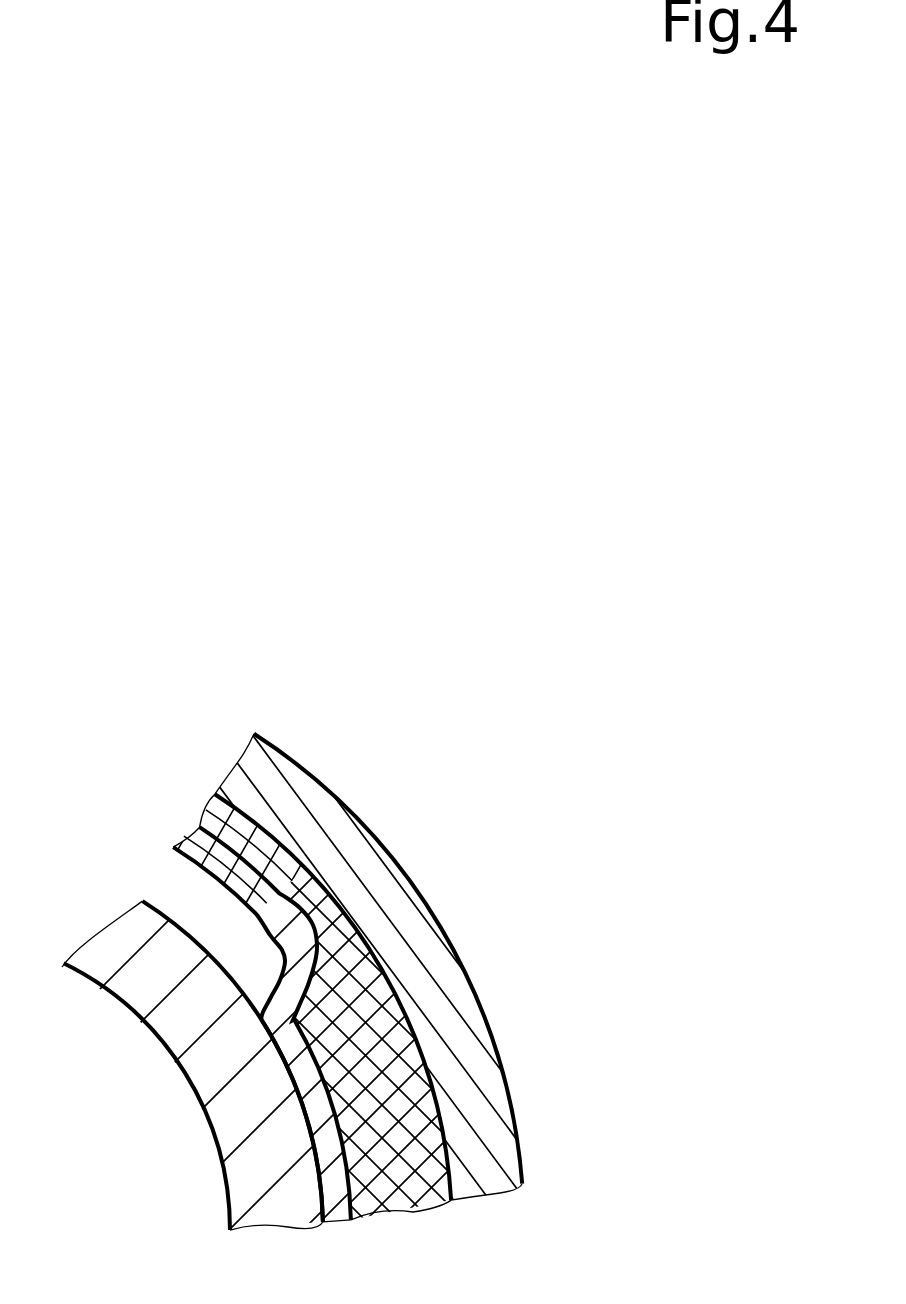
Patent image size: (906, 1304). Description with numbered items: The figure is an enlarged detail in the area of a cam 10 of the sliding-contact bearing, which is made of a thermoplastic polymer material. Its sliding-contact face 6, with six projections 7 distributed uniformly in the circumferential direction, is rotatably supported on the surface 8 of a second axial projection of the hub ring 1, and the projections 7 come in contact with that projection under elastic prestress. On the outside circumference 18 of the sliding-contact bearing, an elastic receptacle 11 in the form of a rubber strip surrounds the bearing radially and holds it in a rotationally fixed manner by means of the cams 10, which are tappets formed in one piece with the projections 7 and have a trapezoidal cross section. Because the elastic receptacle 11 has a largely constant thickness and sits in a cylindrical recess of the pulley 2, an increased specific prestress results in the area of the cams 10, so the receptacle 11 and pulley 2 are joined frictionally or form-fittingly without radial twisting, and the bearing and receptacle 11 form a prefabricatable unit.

The hub ring 1 is at (213, 1058).
The pulley 2 is at (425, 982).
The sliding-contact face 6 is at (298, 1093).
The projection 7 is at (322, 1117).
The surface of hub ring 8 is at (184, 933).
The cam 10 is at (227, 863).
The elastic receptacle 11 is at (222, 818).
The outside circumference of the sliding-contact bearing 18 is at (303, 910).